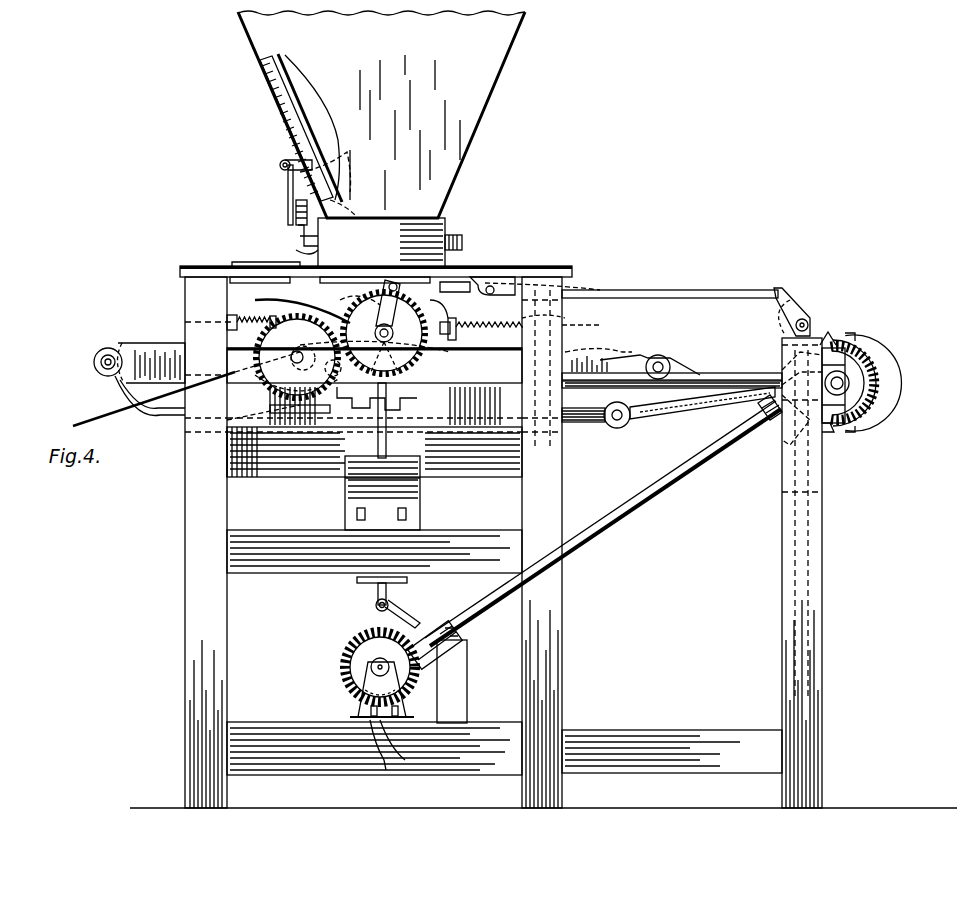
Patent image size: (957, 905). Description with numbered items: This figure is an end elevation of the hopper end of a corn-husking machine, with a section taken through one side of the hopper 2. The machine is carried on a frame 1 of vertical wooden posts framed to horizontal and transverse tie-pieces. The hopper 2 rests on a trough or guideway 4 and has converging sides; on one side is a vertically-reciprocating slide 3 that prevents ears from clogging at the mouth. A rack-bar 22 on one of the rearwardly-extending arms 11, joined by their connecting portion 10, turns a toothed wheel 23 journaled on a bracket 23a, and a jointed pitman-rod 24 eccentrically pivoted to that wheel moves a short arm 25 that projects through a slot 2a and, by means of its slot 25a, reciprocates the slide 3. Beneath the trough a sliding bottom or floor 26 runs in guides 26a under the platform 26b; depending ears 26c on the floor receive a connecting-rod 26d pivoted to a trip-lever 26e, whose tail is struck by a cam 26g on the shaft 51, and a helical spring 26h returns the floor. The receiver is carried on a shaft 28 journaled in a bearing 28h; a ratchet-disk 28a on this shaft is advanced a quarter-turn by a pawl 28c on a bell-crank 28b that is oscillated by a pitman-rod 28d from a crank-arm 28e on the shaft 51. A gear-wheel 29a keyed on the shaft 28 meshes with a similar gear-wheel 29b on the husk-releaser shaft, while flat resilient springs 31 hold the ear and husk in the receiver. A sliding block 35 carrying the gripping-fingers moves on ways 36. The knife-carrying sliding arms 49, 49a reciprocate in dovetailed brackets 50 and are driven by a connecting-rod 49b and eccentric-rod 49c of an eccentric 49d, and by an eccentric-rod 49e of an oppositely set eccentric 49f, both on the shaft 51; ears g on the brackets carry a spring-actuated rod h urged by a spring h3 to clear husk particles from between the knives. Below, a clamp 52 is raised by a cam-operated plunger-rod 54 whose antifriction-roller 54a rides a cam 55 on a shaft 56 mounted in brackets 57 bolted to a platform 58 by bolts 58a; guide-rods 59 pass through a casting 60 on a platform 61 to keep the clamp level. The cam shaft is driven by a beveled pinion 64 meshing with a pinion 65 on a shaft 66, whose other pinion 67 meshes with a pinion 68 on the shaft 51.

The frame 1 is at (185, 601).
The hopper 2 is at (381, 114).
The slot in the hopper 2a is at (284, 112).
The vertically-reciprocating slide 3 is at (268, 74).
The trough or guideway 4 is at (381, 242).
The connecting portion of the arms 10 is at (310, 255).
The rearwardly-extending arms 11 is at (462, 243).
The rack-bar 22 is at (298, 236).
The toothed wheel 23 is at (296, 208).
The bracket 23a is at (350, 208).
The jointed pitman-rod 24 is at (288, 182).
The short arm 25 is at (298, 160).
The slot in the arm 25a is at (350, 165).
The sliding bottom or floor 26 is at (448, 312).
The guides 26a is at (385, 278).
The platform 26b is at (518, 268).
The depending ears 26c is at (562, 289).
The connecting-rod 26d is at (685, 290).
The trip-lever 26e is at (812, 320).
The cam 26g is at (836, 345).
The helical spring 26h is at (245, 266).
The shaft 28 is at (384, 346).
The ratchet-disk 28a is at (365, 320).
The bell-crank or bent lever 28b is at (272, 320).
The pawl 28c is at (445, 276).
The pitman-rod 28d is at (612, 392).
The crank-arm 28e is at (750, 414).
The bearing 28h is at (455, 353).
The gear-wheel 29a is at (335, 278).
The gear-wheel 29b is at (297, 357).
The flat resilient springs 31 is at (452, 318).
The sliding block 35 is at (392, 420).
The ways or guides 36 is at (440, 395).
The sliding arm 49 is at (630, 366).
The sliding arm 49a is at (146, 350).
The connecting-rod 49b is at (606, 425).
The eccentric-rod 49c is at (675, 410).
The eccentric 49d is at (770, 373).
The eccentric-rod 49e is at (680, 372).
The eccentric 49f is at (890, 402).
The brackets 50 is at (225, 422).
The shaft 51 is at (846, 381).
The clamp 52 is at (342, 412).
The cam-operated plunger-rod 54 is at (378, 596).
The antifriction-roller 54a is at (375, 608).
The cam 55 is at (378, 626).
The shaft 56 is at (353, 689).
The brackets 57 is at (360, 705).
The platform 58 is at (258, 728).
The bolts 58a is at (405, 745).
The guide-rods 59 is at (345, 479).
The casting 60 is at (420, 480).
The platform 61 is at (455, 535).
The beveled pinion 64 is at (340, 665).
The beveled pinion 65 is at (405, 630).
The shaft 66 is at (612, 524).
The beveled pinion 67 is at (830, 430).
The beveled pinion 68 is at (880, 383).
The ears g is at (265, 318).
The spring-actuated rod h is at (195, 322).
The spring h3 is at (205, 332).